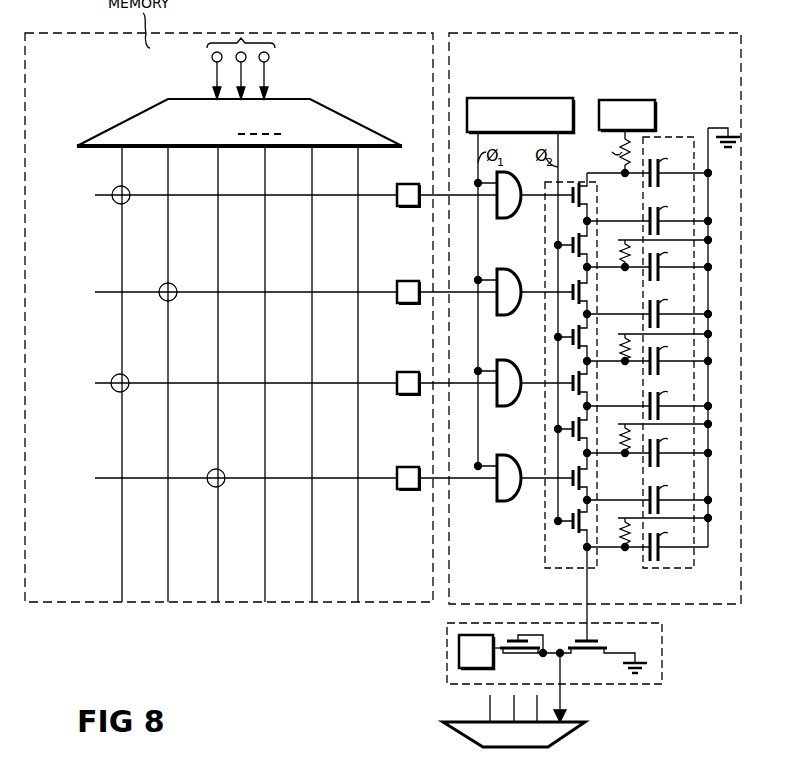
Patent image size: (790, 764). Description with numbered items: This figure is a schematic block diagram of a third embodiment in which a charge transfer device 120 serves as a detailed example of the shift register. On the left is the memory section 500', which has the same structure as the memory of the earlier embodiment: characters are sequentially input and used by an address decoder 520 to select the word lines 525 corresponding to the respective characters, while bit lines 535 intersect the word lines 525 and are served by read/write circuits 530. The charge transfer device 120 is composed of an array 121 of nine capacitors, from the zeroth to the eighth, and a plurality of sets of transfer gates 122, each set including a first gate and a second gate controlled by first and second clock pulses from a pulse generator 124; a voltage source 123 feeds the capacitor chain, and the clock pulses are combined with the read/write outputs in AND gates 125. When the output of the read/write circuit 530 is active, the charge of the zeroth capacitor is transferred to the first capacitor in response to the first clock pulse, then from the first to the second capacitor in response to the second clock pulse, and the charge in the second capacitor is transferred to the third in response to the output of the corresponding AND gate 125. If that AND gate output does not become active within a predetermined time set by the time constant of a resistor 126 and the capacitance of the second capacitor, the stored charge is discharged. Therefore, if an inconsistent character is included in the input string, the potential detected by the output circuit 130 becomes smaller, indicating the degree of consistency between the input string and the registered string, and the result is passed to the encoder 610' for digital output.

The memory section 500' is at (229, 339).
The address decoder 520 is at (335, 112).
The word lines 525 is at (167, 258).
The read/write circuit 530 is at (401, 208).
The bit lines 535 is at (77, 163).
The charge transfer device 120 is at (698, 606).
The array of capacitors 121 is at (693, 569).
The transfer gates 122 is at (540, 558).
The voltage source 123 is at (632, 98).
The pulse generator 124 is at (534, 98).
The AND gate 125 is at (503, 219).
The resistor 126 is at (620, 352).
The output circuit 130 is at (638, 685).
The encoder 610' is at (534, 722).